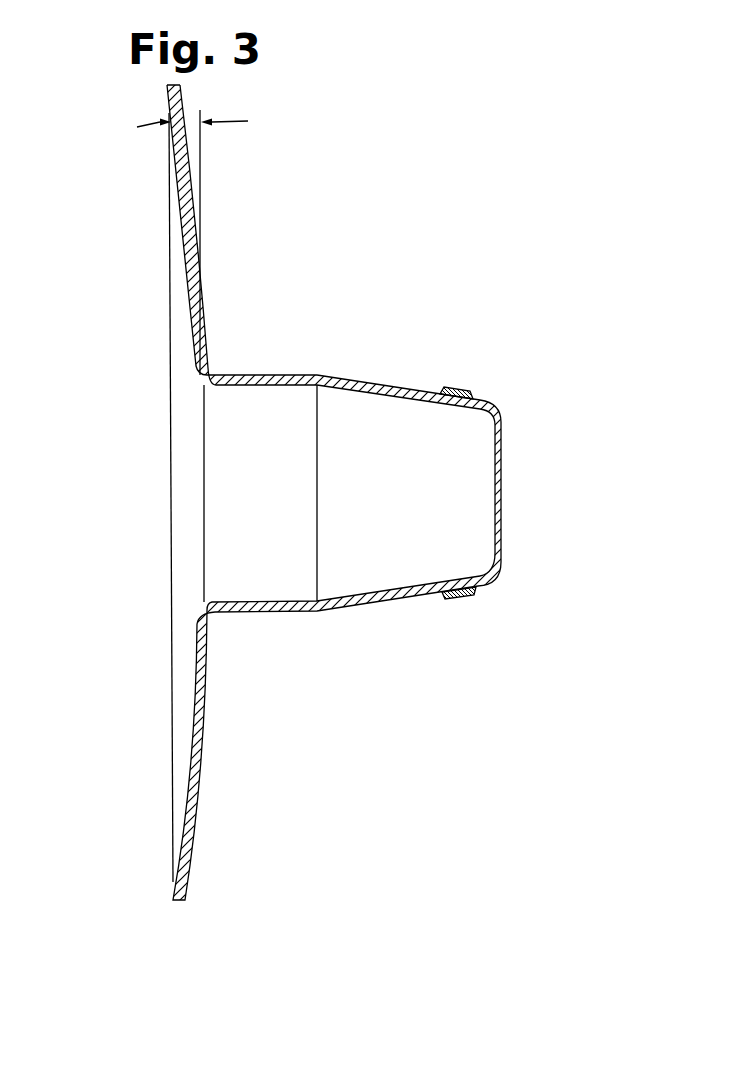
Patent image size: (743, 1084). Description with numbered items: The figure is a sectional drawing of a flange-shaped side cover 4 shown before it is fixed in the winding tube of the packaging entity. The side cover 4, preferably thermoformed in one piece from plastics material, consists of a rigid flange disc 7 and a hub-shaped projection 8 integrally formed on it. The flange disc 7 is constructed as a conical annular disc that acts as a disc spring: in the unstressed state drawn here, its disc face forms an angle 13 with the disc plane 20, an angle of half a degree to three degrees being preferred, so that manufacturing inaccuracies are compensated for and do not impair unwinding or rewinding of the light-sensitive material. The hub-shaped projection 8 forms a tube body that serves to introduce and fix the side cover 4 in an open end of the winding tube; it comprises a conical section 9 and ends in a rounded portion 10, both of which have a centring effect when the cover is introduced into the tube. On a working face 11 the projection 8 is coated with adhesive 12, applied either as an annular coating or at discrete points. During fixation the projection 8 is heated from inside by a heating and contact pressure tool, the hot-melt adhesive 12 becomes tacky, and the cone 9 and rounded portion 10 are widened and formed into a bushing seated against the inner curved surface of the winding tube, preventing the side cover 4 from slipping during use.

The side cover 4 is at (212, 740).
The flange disc 7 is at (193, 210).
The hub-shaped projection 8 is at (287, 378).
The conical section 9 is at (362, 604).
The rounded portion 10 is at (499, 412).
The working face 11 is at (381, 383).
The adhesive 12 is at (459, 388).
The angle 13 is at (190, 112).
The disc plane 20 is at (201, 147).